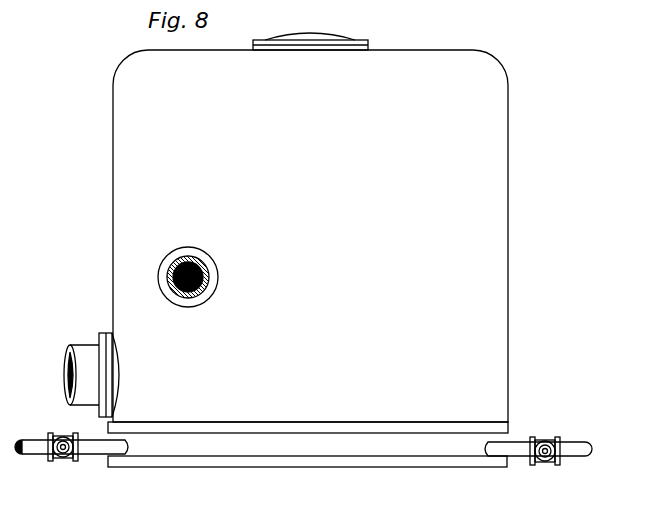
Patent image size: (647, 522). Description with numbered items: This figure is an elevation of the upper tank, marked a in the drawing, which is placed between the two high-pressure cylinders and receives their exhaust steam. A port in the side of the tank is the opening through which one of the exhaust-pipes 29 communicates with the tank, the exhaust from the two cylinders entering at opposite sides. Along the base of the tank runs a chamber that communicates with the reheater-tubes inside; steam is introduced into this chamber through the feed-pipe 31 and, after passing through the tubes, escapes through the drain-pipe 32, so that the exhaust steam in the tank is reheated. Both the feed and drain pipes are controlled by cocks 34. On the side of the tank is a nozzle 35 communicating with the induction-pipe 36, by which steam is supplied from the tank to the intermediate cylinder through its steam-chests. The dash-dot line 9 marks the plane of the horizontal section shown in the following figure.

The casing a is at (310, 236).
The section line 9 9 is at (150, 277).
The exhaust-pipes 29 is at (208, 284).
The feed-pipe 31 is at (27, 440).
The drain-pipe 32 is at (580, 443).
The cocks 34 is at (57, 461).
The nozzle 35 is at (103, 333).
The induction-pipe 36 is at (66, 372).